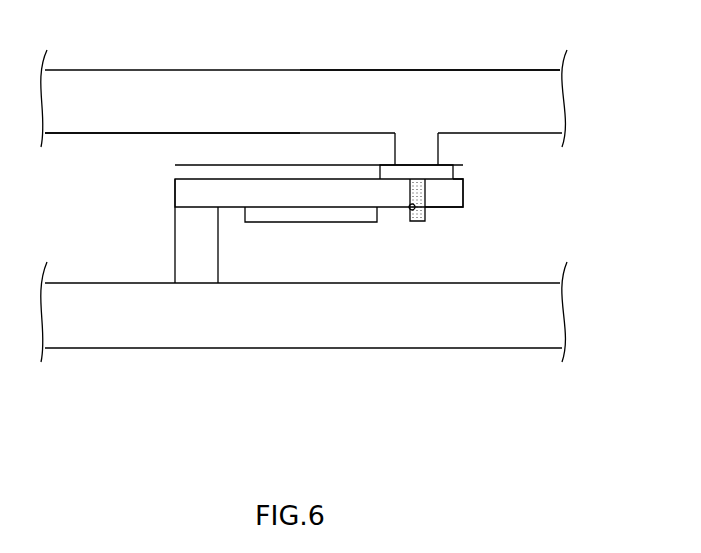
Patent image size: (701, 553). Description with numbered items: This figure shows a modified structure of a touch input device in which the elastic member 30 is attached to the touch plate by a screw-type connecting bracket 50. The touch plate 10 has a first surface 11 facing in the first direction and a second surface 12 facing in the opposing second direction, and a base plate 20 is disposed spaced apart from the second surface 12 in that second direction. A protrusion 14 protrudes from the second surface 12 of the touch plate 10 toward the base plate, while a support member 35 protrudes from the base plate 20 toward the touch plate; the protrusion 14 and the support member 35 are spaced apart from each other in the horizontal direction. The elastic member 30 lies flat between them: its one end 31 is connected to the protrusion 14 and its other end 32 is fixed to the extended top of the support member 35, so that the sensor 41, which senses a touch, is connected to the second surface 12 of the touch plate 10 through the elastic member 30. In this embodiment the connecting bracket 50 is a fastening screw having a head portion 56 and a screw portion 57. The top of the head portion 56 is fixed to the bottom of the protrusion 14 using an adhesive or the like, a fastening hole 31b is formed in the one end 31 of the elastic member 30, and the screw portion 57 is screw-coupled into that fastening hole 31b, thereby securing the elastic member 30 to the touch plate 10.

The touch plate 10 is at (262, 85).
The first surface 11 is at (426, 70).
The second surface 12 is at (70, 135).
The protrusion 14 is at (432, 148).
The base plate 20 is at (303, 337).
The elastic member 30 is at (297, 185).
The one end of the elastic member 31 is at (455, 196).
The fastening hole 31b is at (412, 209).
The other end of the elastic member 32 is at (178, 193).
The support member 35 is at (178, 236).
The sensor 41 is at (307, 215).
The connecting bracket 50 is at (545, 182).
The head portion 56 is at (452, 172).
The screw portion 57 is at (428, 215).